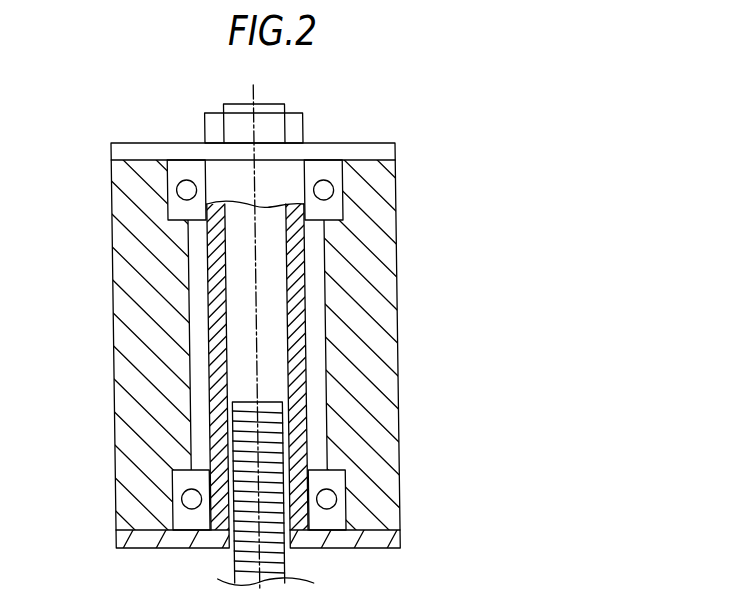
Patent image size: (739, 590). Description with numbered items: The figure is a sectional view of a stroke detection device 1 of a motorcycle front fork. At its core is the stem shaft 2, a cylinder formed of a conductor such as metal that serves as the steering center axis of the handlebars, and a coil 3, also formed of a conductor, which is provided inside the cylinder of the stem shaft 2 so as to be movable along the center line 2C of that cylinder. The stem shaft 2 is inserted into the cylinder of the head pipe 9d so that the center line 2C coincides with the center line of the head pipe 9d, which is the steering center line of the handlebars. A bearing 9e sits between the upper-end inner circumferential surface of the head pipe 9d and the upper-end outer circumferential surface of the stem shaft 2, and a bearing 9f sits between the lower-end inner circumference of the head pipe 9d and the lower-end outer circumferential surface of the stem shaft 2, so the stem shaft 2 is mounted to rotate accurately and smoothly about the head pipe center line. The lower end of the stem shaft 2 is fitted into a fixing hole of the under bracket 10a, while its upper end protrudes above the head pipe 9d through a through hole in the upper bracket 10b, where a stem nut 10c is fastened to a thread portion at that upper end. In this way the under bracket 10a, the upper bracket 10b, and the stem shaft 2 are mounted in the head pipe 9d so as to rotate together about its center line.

The stroke detection device 1 is at (346, 387).
The stem shaft 2 is at (305, 317).
The center line 2C is at (253, 95).
The coil 3 is at (275, 410).
The head pipe 9d is at (396, 221).
The bearing 9e is at (330, 168).
The bearing 9f is at (337, 479).
The under bracket 10a is at (398, 541).
The upper bracket 10b is at (130, 143).
The stem nut 10c is at (300, 113).